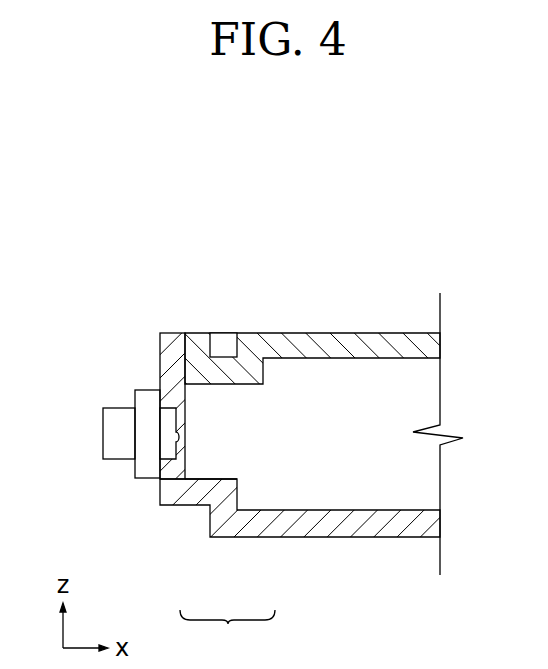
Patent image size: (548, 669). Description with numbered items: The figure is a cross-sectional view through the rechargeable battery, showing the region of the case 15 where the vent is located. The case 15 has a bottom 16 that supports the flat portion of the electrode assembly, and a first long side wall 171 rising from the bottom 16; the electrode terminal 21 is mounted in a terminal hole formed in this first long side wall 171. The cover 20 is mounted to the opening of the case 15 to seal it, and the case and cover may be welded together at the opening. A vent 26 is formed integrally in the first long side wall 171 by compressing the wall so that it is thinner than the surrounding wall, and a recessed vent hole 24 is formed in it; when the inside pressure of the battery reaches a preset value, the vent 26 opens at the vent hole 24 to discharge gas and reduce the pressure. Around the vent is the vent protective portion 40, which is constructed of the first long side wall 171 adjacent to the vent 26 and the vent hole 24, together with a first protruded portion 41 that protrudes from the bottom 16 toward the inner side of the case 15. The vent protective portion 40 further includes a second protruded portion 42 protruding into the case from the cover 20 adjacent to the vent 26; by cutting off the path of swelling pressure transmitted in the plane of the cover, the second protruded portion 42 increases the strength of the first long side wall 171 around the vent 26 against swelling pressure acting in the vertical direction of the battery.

The case 15 is at (268, 458).
The bottom 16 is at (390, 510).
The cover 20 is at (360, 348).
The electrode terminal 21 is at (101, 446).
The vent hole 24 is at (167, 423).
The vent 26 is at (167, 448).
The vent protective portion 40 is at (227, 633).
The first protruded portion 41 is at (193, 495).
The second protruded portion 42 is at (228, 368).
The first long side wall 171 is at (173, 351).